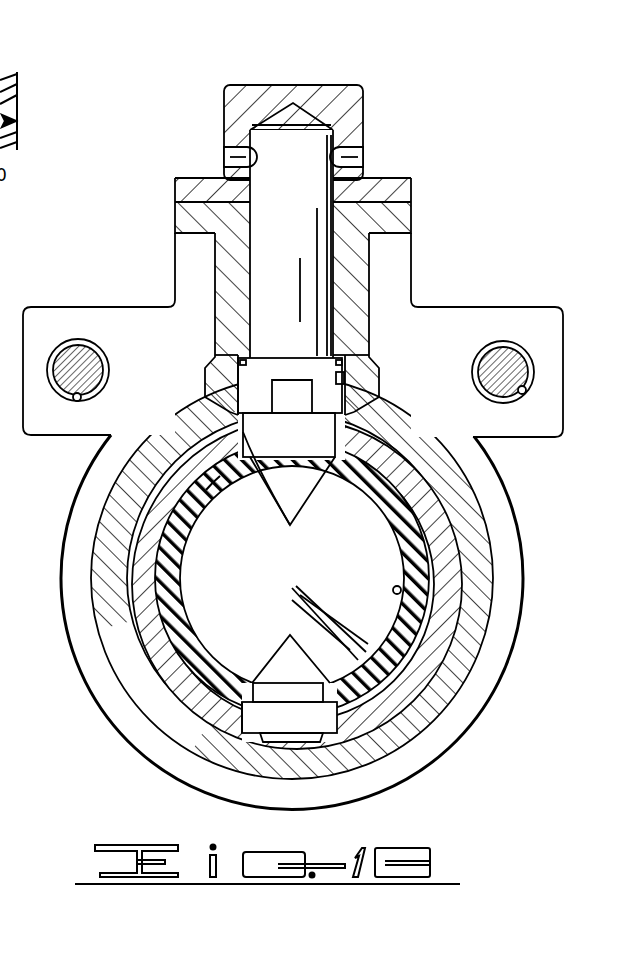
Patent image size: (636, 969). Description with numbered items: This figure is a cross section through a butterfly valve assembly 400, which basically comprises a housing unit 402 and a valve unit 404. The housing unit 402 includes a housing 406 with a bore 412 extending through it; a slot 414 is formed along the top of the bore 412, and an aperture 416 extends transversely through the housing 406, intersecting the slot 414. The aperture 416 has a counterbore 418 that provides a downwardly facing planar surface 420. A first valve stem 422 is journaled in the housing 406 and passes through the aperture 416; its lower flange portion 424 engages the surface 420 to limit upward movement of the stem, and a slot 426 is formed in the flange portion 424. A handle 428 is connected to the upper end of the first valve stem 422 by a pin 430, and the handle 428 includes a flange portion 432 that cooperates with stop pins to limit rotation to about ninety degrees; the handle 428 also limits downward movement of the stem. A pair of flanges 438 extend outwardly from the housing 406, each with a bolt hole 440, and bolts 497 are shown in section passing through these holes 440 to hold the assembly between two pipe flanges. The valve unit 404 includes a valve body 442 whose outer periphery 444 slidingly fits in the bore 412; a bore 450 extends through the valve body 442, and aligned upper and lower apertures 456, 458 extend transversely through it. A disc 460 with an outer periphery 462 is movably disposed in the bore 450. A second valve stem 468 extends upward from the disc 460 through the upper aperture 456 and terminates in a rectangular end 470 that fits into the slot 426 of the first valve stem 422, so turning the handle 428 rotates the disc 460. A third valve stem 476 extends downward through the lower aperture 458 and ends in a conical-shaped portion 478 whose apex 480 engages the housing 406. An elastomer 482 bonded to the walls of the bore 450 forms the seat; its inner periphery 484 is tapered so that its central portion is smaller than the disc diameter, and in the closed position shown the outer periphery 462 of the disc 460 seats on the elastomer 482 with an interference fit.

The valve assembly 400 is at (405, 158).
The housing unit 402 is at (415, 233).
The valve unit 404 is at (420, 742).
The housing 406 is at (355, 283).
The bore 412 is at (172, 690).
The slot 414 is at (228, 410).
The aperture 416 is at (250, 269).
The counterbore 418 is at (238, 360).
The planar surface 420 is at (345, 358).
The first valve stem 422 is at (320, 269).
The lower flange portion 424 is at (345, 381).
The slot 426 is at (290, 378).
The handle 428 is at (352, 105).
The pin 430 is at (232, 157).
The flange portion 432 is at (180, 193).
The flanges 438 is at (90, 318).
The bolt holes 440 is at (75, 399).
The valve body 442 is at (428, 515).
The outer periphery 444 is at (120, 590).
The bore 450 is at (400, 646).
The upper aperture 456 is at (298, 492).
The lower aperture 458 is at (268, 702).
The disc 460 is at (390, 548).
The outer periphery 462 is at (172, 552).
The second valve stem 468 is at (343, 436).
The rectangular end 470 is at (300, 408).
The third valve stem 476 is at (258, 748).
The conical-shaped portion 478 is at (275, 758).
The apex 480 is at (292, 750).
The elastomer 482 is at (208, 508).
The inner periphery 484 is at (401, 592).
The bolts 497 is at (78, 350).